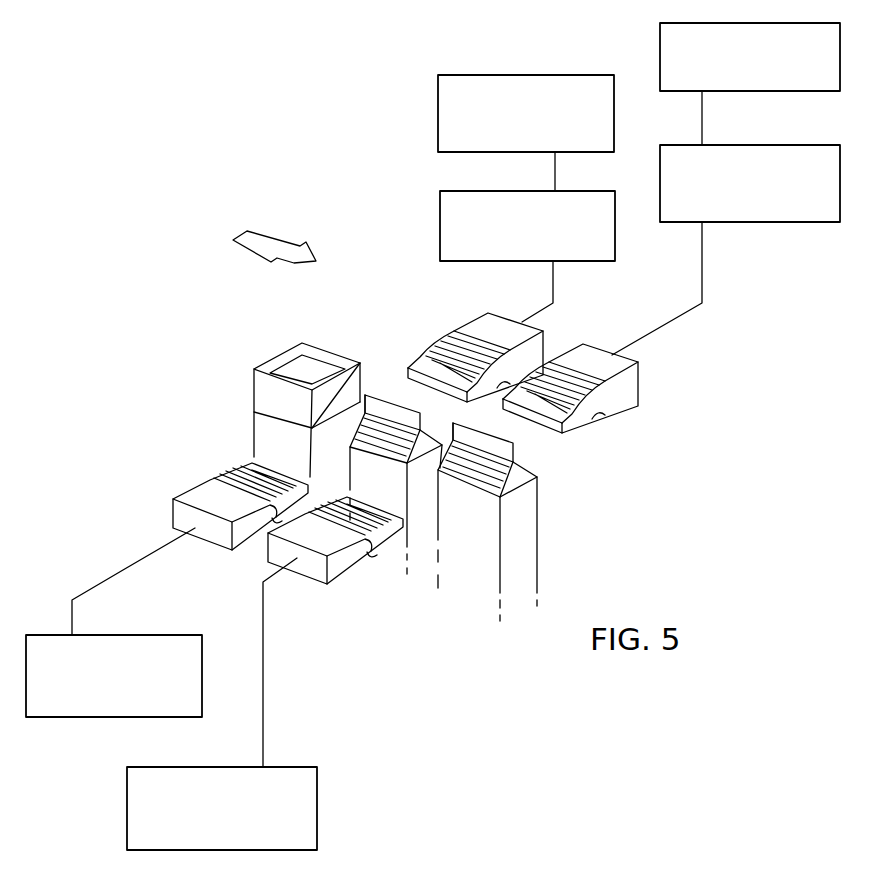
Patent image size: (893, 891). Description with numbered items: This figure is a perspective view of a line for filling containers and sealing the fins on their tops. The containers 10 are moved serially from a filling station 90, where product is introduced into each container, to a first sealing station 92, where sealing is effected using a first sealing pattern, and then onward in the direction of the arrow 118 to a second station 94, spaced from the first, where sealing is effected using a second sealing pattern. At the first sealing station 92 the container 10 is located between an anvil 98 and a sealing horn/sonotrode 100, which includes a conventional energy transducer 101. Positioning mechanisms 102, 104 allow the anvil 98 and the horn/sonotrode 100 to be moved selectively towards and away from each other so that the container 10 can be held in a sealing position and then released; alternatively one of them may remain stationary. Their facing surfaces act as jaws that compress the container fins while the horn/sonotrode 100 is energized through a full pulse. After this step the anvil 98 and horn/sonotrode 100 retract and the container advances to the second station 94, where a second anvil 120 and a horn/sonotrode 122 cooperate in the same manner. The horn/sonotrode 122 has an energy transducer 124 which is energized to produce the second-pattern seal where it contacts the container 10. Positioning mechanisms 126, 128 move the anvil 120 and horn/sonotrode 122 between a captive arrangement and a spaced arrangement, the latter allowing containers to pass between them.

The container 10 is at (251, 430).
The filling station 90 is at (238, 446).
The first sealing station 92 is at (385, 376).
The second station 94 is at (554, 488).
The anvil 98 is at (200, 497).
The sealing horn/sonotrode 100 is at (478, 322).
The energy transducer 101 is at (440, 223).
The positioning mechanism 102 is at (142, 633).
The positioning mechanism 104 is at (438, 110).
The arrow 118 is at (272, 238).
The second anvil 120 is at (340, 567).
The horn/sonotrode 122 is at (633, 387).
The energy transducer 124 is at (792, 222).
The positioning mechanism 126 is at (317, 828).
The positioning mechanism 128 is at (660, 46).